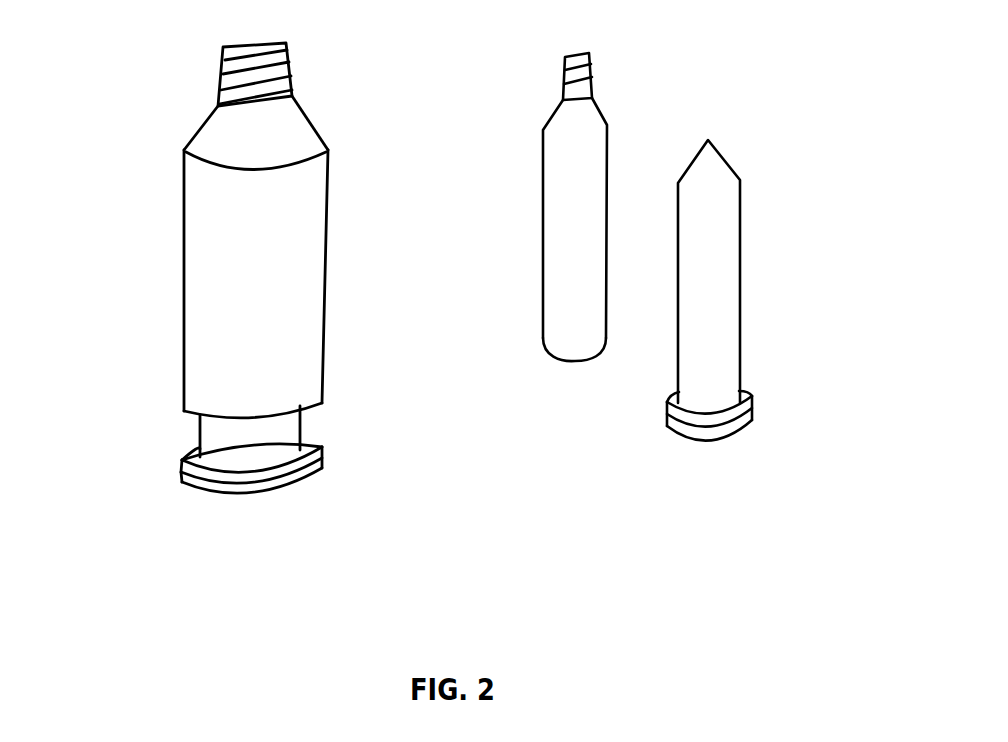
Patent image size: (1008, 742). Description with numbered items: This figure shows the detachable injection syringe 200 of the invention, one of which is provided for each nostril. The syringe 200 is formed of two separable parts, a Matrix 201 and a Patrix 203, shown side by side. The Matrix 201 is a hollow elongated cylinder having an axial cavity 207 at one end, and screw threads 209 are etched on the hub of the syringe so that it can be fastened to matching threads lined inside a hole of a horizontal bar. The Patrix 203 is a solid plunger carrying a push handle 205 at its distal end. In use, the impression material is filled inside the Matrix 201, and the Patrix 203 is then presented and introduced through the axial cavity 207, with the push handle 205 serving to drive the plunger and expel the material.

The injection syringe 200 is at (155, 307).
The Matrix 201 is at (610, 160).
The Patrix 203 is at (741, 236).
The push handle 205 is at (752, 416).
The axial cavity 207 is at (590, 360).
The screw threads 209 is at (592, 82).